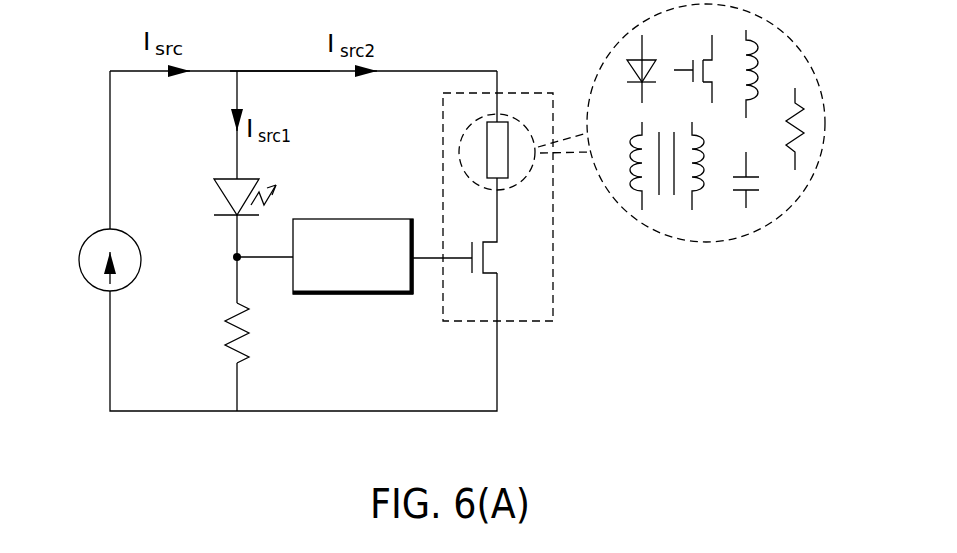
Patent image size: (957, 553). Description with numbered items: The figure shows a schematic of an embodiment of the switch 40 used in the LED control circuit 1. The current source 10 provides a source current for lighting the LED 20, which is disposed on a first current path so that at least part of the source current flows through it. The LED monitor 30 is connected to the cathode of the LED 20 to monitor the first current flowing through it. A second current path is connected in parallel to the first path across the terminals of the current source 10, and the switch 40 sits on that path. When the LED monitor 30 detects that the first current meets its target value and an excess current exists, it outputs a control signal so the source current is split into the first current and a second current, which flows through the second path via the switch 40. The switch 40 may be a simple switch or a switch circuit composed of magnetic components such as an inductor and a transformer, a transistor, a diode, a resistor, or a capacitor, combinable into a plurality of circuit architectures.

The LED control circuit 1 is at (281, 71).
The current source 10 is at (79, 262).
The LED 20 is at (223, 199).
The LED monitor 30 is at (352, 219).
The switch 40 is at (553, 287).